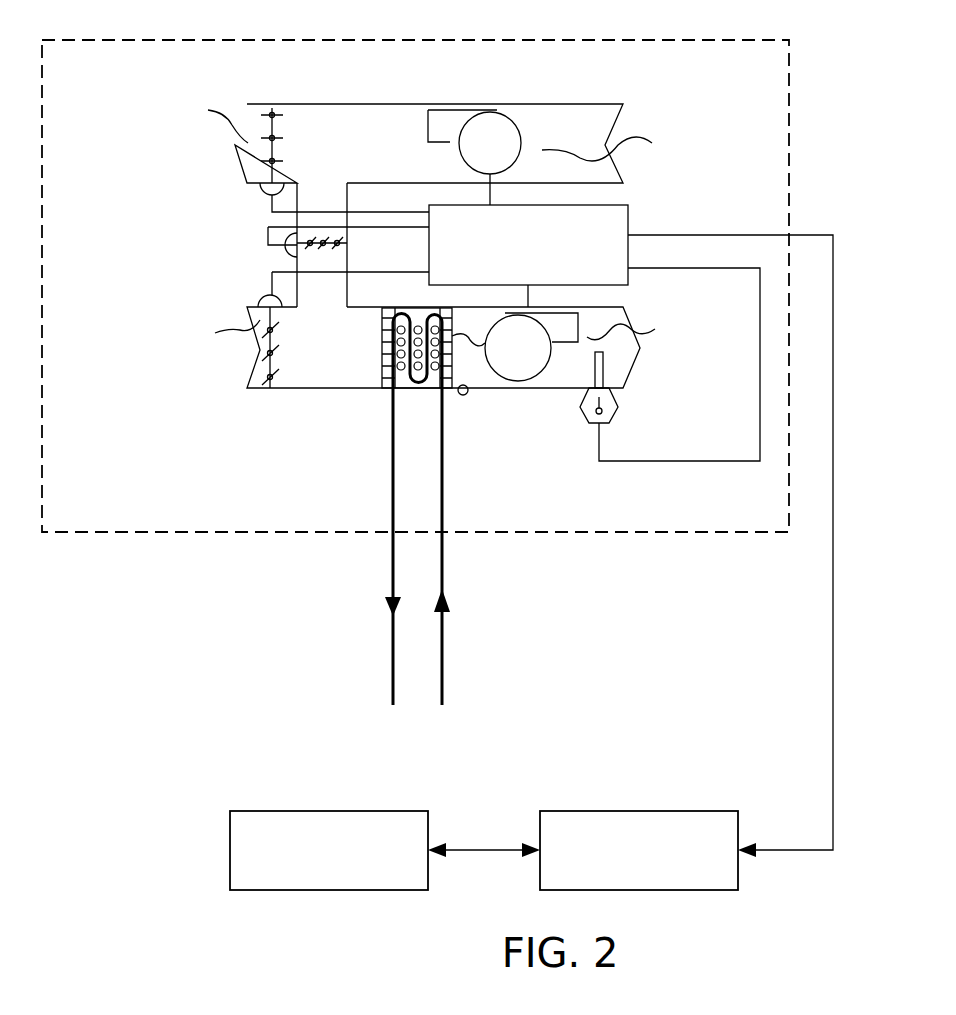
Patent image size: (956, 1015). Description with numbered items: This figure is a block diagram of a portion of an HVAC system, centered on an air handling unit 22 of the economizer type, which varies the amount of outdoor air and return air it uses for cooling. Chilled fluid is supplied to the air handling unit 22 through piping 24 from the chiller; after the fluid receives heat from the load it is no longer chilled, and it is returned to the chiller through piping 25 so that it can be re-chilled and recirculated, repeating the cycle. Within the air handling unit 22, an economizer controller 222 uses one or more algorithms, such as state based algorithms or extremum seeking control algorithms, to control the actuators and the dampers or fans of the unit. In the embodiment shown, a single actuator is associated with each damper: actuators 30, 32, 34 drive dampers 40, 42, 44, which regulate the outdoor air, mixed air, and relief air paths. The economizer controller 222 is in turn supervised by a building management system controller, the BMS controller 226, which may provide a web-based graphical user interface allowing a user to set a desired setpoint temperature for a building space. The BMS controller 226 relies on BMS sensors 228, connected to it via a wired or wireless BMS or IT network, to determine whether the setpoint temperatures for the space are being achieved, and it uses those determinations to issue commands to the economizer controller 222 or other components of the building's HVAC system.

The air handling unit 22 is at (200, 40).
The piping 24 is at (442, 568).
The piping 25 is at (393, 568).
The actuator 30 is at (268, 298).
The actuator 32 is at (288, 234).
The actuator 34 is at (263, 188).
The damper 40 is at (274, 341).
The damper 42 is at (327, 238).
The damper 44 is at (272, 127).
The economizer controller 222 is at (622, 210).
The BMS controller 226 is at (703, 823).
The BMS sensors 228 is at (277, 823).